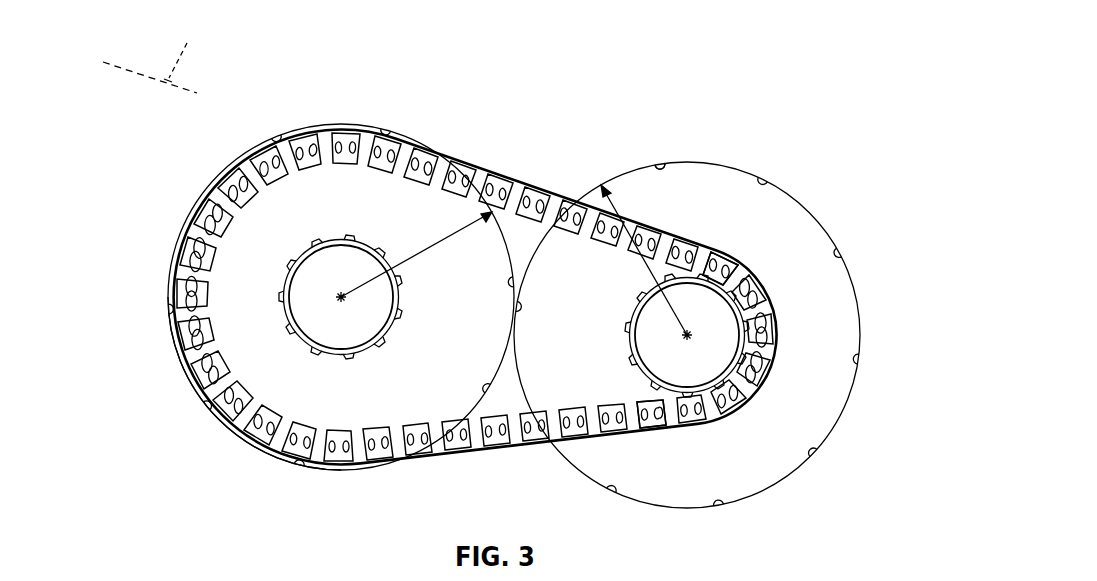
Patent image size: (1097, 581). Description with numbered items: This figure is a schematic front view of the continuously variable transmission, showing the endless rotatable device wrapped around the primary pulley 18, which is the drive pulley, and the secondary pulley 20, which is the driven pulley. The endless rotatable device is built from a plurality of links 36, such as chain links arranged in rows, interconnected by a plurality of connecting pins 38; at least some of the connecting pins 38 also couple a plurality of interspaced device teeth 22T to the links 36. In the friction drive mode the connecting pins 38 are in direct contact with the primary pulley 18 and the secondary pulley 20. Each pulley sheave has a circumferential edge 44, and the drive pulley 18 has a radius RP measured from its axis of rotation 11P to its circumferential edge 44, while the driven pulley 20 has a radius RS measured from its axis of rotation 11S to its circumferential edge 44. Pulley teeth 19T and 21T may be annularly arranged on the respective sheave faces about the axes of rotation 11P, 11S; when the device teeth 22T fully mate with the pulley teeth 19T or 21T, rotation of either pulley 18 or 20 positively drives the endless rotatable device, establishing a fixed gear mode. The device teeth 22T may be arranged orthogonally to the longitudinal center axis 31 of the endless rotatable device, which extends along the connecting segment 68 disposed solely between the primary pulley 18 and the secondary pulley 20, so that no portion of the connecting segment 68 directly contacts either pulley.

The primary pulley 18 is at (260, 134).
The secondary pulley 20 is at (723, 155).
The longitudinal center axis 31 is at (151, 54).
The links 36 is at (364, 140).
The connecting pins 38 is at (200, 376).
The circumferential edge 44 is at (661, 161).
The connecting segment 68 is at (541, 188).
The axis of rotation 11P is at (341, 297).
The axis of rotation 11S is at (687, 335).
The pulley teeth 19T is at (287, 322).
The pulley teeth 21T is at (668, 424).
The device teeth 22T is at (325, 443).
The radius of the drive pulley RP is at (413, 258).
The radius of the driven pulley RS is at (612, 203).